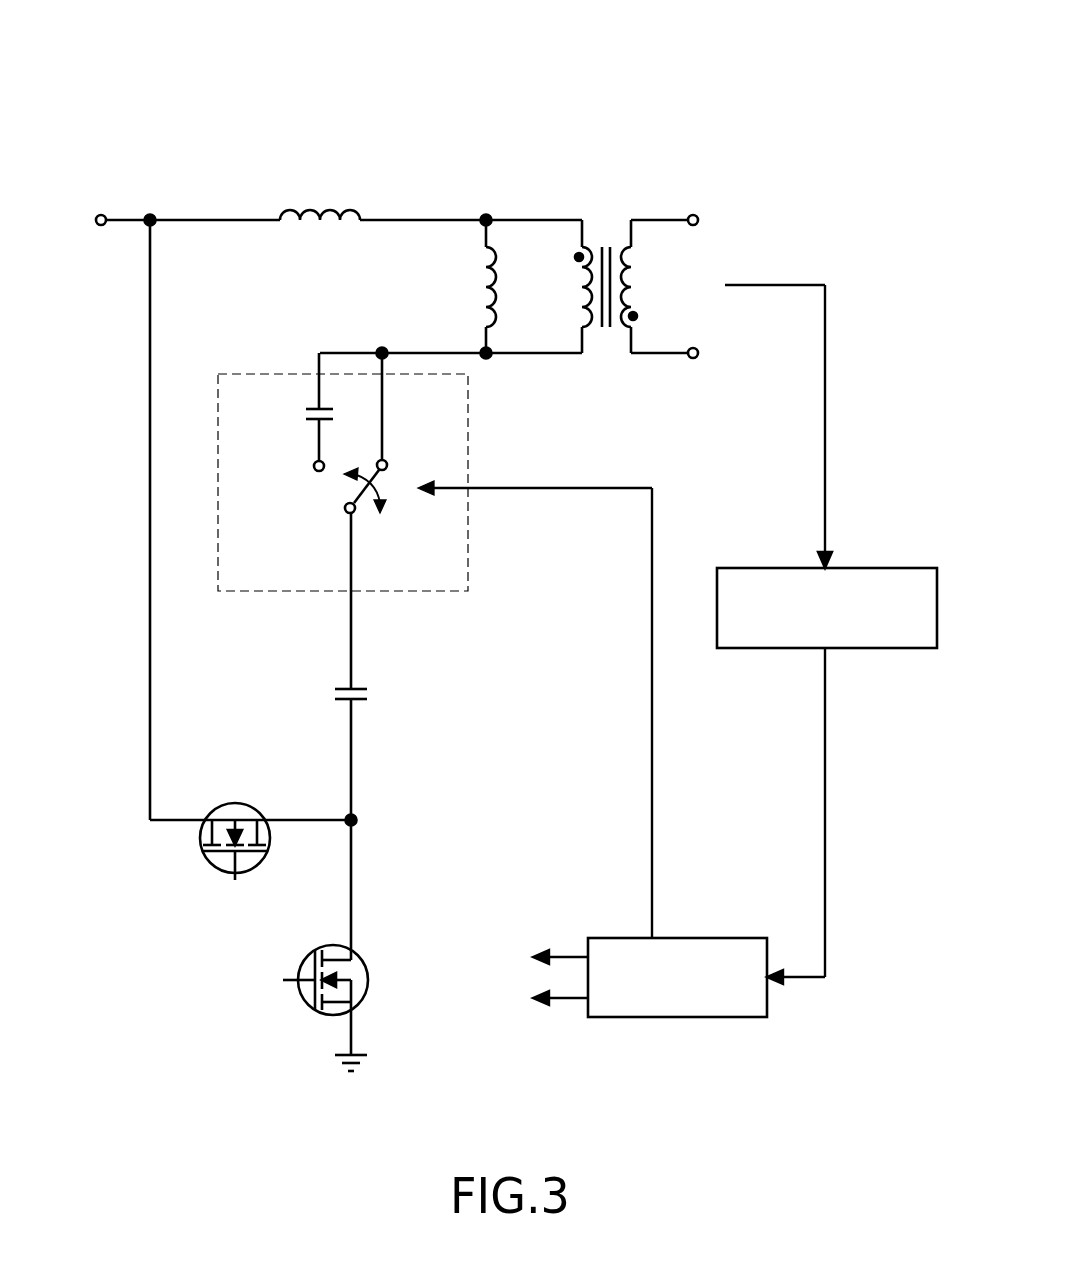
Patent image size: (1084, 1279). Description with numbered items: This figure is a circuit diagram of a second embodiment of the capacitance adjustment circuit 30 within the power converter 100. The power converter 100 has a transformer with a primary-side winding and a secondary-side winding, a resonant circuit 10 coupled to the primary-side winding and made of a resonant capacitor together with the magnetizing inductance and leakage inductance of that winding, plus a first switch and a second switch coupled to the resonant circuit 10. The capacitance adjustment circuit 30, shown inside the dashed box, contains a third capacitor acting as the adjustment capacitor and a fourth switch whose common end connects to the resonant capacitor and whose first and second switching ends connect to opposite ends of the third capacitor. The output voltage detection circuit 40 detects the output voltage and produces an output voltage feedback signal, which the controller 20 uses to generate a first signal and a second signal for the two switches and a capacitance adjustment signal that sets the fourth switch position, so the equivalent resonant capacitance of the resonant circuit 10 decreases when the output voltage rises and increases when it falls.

The power converter 100 is at (352, 34).
The resonant circuit 10 is at (305, 330).
The capacitance adjustment circuit 30 is at (457, 413).
The output voltage detection circuit 40 is at (890, 578).
The controller 20 is at (743, 948).